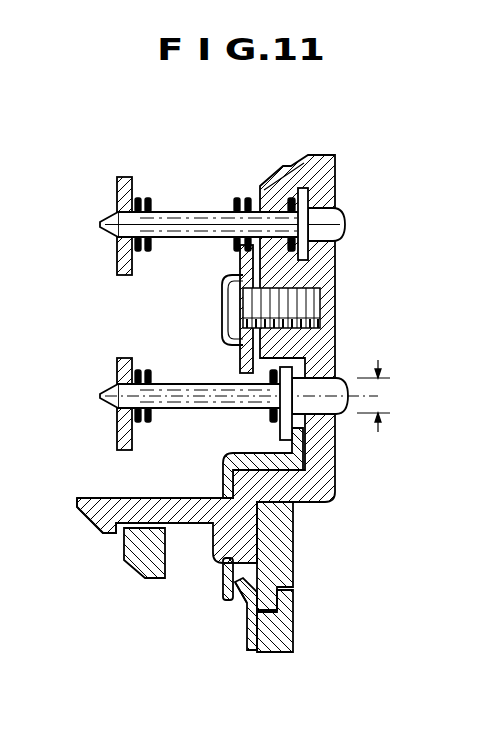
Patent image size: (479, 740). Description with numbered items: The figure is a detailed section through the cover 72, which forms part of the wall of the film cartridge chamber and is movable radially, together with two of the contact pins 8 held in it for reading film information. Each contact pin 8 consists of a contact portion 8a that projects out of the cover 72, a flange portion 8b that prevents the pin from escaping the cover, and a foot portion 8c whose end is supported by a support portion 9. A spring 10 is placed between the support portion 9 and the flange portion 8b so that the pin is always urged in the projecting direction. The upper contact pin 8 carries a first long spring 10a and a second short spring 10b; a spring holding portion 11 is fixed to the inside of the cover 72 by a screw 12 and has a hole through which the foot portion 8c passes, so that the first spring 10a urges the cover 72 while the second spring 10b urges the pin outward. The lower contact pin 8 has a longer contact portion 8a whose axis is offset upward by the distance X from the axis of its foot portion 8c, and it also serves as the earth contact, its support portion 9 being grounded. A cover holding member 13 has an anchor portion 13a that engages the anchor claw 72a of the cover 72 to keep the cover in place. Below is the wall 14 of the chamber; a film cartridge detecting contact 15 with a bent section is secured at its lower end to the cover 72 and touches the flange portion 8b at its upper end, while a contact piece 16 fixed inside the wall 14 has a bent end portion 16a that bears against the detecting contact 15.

The contact pin 8 is at (261, 335).
The contact portion 8a is at (348, 405).
The flange portion 8b is at (290, 418).
The foot portion 8c is at (187, 406).
The support portion 9 is at (119, 253).
The spring 10 is at (144, 380).
The first long spring 10a is at (143, 197).
The second short spring 10b is at (253, 197).
The spring holding portion 11 is at (240, 262).
The screw 12 is at (308, 301).
The cover holding member 13 is at (286, 538).
The anchor portion 13a is at (123, 548).
The wall of the film cartridge chamber 14 is at (292, 622).
The film cartridge detecting contact 15 is at (223, 581).
The contact piece 16 is at (247, 622).
The bent end portion 16a is at (243, 598).
The cover 72 is at (323, 347).
The anchor claw 72a is at (97, 528).
The axis deviation X is at (380, 396).